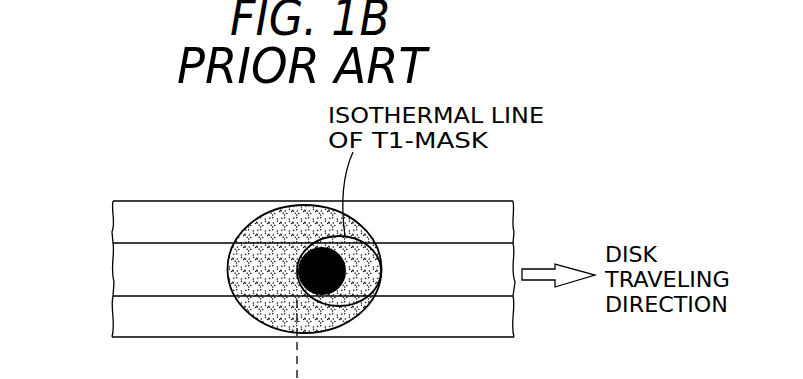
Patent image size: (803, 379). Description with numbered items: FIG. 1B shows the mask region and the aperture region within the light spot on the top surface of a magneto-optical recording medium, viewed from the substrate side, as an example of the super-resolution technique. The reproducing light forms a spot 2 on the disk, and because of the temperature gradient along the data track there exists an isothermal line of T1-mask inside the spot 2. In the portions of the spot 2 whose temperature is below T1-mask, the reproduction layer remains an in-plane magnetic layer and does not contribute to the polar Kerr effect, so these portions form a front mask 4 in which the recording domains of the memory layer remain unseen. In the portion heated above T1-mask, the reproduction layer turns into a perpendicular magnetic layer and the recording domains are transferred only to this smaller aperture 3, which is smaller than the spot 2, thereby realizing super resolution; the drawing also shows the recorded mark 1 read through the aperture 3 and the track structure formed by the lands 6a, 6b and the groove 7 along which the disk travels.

The recorded mark 1 is at (375, 292).
The spot 2 is at (243, 306).
The aperture 3 is at (372, 259).
The front mask 4 is at (263, 223).
The land 6a is at (128, 219).
The land 6b is at (130, 321).
The groove (track) 7 is at (128, 270).